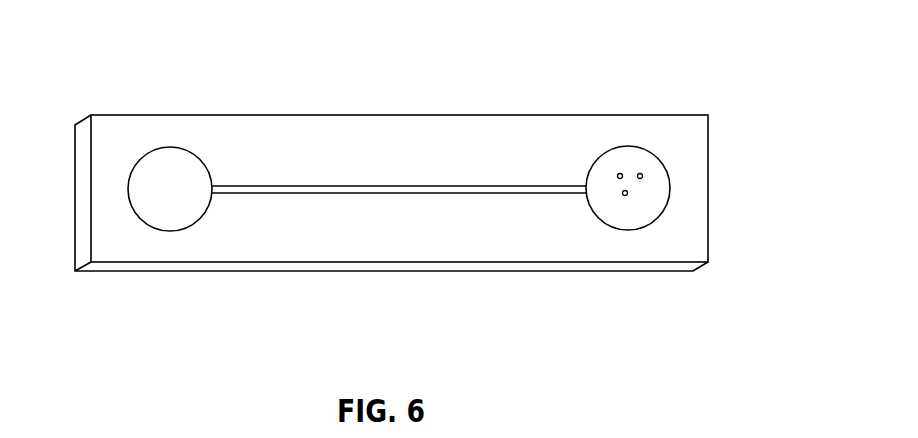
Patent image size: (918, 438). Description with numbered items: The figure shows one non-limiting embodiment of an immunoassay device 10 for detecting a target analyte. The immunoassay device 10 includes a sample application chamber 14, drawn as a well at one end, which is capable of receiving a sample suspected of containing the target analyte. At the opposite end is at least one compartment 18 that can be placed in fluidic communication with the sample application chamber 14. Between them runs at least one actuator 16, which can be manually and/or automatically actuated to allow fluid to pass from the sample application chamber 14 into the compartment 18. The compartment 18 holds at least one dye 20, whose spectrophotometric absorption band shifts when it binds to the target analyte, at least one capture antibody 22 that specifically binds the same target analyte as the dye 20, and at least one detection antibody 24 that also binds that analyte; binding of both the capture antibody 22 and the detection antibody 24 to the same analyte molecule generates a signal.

The immunoassay device 10 is at (703, 65).
The sample application chamber 14 is at (136, 189).
The actuator 16 is at (242, 185).
The compartment 18 is at (660, 190).
The dye 20 is at (620, 173).
The capture antibody 22 is at (640, 173).
The detection antibody 24 is at (625, 196).